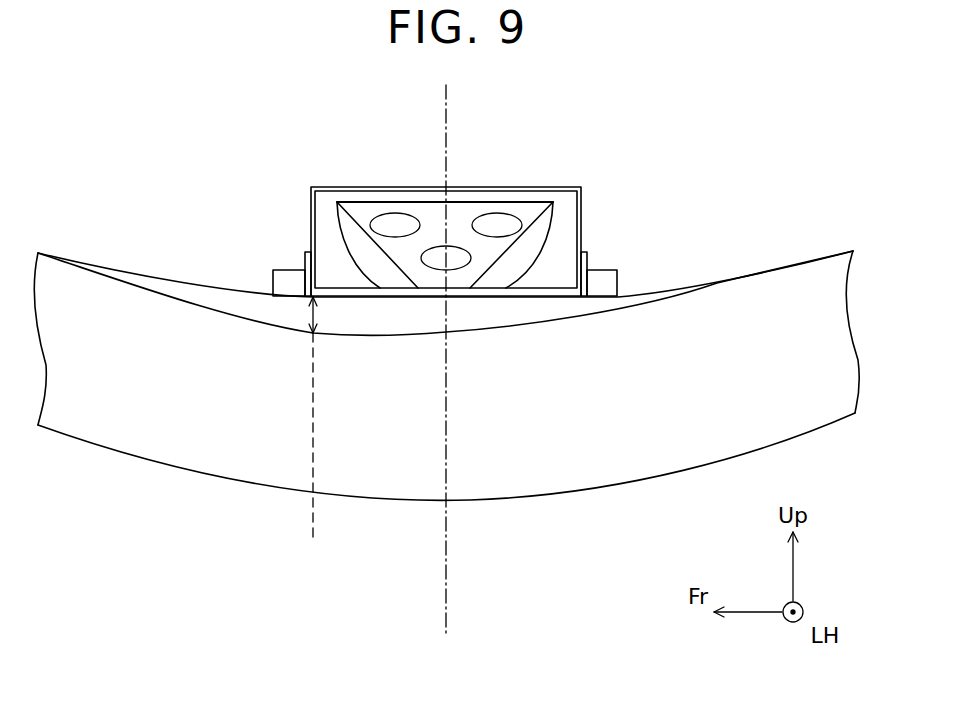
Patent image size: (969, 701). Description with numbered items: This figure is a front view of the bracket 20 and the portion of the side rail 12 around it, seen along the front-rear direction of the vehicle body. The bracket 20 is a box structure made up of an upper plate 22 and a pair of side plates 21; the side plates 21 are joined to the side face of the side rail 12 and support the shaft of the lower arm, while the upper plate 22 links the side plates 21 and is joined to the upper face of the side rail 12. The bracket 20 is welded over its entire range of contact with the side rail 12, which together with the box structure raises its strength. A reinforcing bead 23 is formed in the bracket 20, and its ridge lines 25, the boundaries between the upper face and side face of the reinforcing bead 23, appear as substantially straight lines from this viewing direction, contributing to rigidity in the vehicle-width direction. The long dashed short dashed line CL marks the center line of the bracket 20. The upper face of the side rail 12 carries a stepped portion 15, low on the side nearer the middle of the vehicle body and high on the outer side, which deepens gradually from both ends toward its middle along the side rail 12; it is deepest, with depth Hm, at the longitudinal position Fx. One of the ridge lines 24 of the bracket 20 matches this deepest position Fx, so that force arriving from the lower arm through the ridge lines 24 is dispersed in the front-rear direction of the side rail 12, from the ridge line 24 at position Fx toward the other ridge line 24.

The side rail 12 is at (108, 437).
The stepped portion 15 is at (262, 313).
The bracket 20 is at (253, 167).
The side plates 21 is at (310, 204).
The upper plate 22 is at (567, 203).
The reinforcing bead 23 is at (363, 212).
The ridge lines 24 is at (310, 231).
The ridge lines 25 is at (388, 255).
The depth Hm is at (318, 318).
The deepest position Fx is at (313, 449).
The center line CL is at (446, 578).